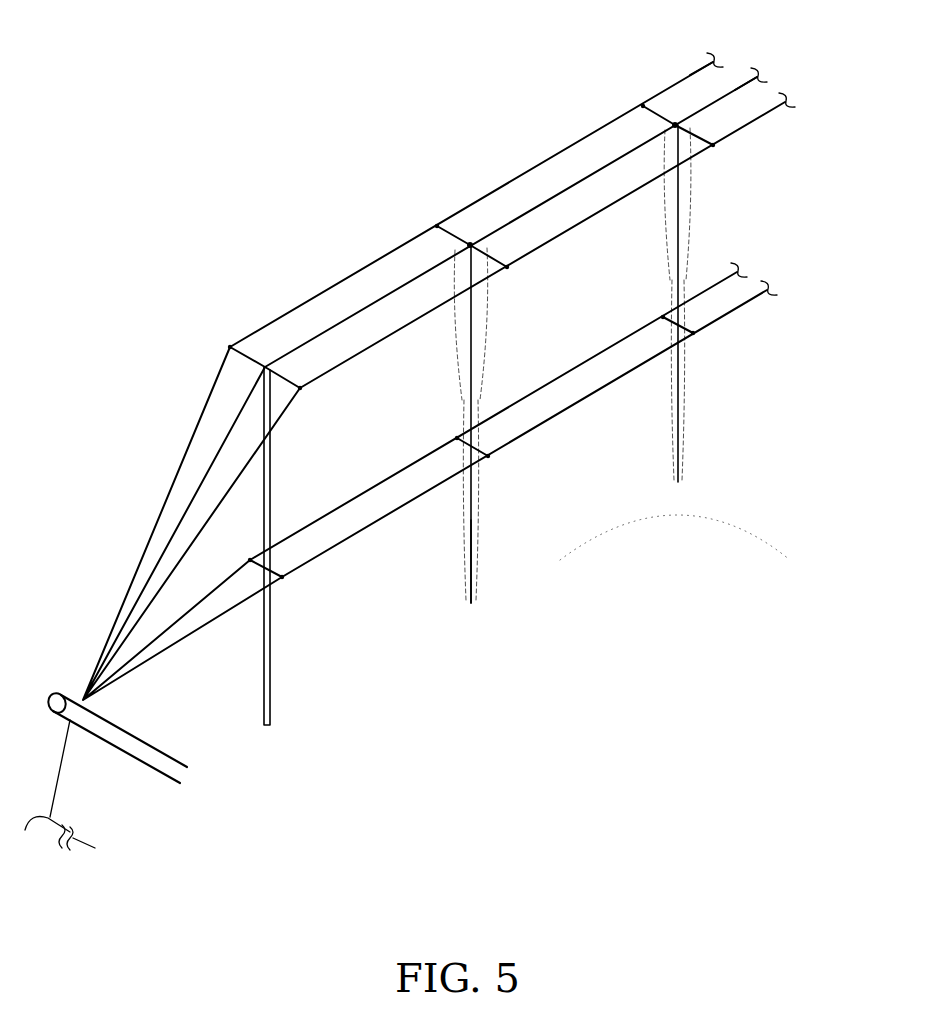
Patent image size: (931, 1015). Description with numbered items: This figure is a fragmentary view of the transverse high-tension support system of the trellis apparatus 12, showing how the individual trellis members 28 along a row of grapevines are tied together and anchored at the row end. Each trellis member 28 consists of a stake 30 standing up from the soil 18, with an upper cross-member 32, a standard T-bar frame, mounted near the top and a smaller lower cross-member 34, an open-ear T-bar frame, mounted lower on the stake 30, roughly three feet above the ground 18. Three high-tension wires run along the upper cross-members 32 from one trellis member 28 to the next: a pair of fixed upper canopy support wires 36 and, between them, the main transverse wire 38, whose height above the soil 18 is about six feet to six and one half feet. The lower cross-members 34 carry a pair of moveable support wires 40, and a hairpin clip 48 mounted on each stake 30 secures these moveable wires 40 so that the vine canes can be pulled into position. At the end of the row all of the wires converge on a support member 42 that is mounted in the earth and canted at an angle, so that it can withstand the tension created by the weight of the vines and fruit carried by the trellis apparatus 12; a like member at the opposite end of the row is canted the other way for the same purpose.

The trellis apparatus 12 is at (173, 127).
The soil 18 is at (767, 527).
The trellis member 28 is at (478, 400).
The stake 30 is at (477, 532).
The upper cross-member 32 is at (503, 264).
The lower cross-member 34 is at (442, 451).
The upper canopy support wires 36 is at (566, 226).
The main transverse wire 38 is at (740, 80).
The moveable support wires 40 is at (710, 290).
The support member 42 is at (145, 767).
The hairpin clip 48 is at (450, 257).